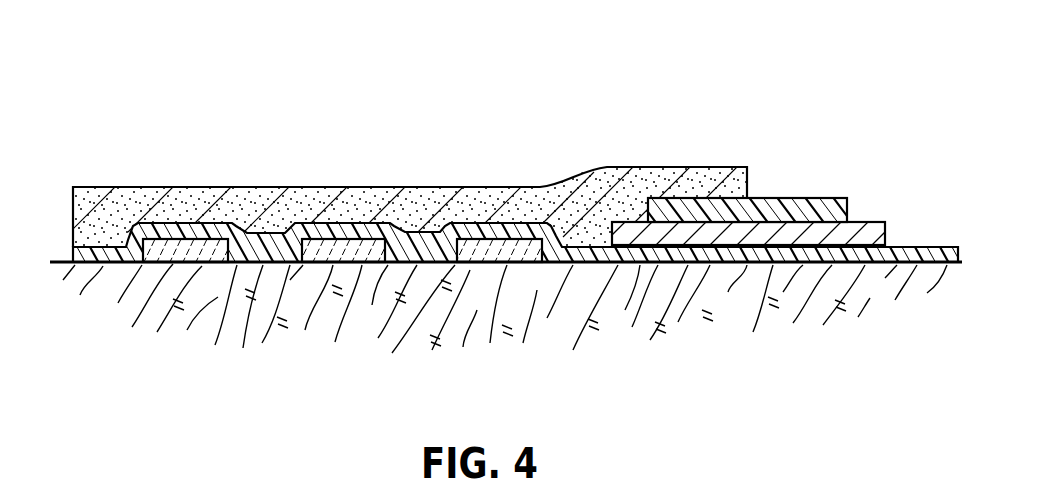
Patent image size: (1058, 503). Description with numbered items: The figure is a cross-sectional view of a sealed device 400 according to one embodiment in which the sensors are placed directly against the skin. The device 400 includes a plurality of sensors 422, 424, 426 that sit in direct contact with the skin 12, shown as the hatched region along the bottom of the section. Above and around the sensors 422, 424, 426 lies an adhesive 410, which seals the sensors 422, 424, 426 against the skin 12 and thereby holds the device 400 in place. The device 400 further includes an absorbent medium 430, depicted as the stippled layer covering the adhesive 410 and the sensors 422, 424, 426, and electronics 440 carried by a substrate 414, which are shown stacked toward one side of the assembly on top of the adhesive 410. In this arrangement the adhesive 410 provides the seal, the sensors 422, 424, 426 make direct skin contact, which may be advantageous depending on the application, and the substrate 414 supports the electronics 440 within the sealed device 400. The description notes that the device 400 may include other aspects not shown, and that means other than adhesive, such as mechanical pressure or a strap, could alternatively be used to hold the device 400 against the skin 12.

The device 400 is at (105, 77).
The absorbent medium 430 is at (272, 187).
The electronics 440 is at (774, 198).
The substrate 414 is at (863, 222).
The adhesive 410 is at (912, 247).
The sensor 422 is at (188, 265).
The sensor 424 is at (343, 265).
The sensor 426 is at (488, 265).
The skin 12 is at (617, 320).